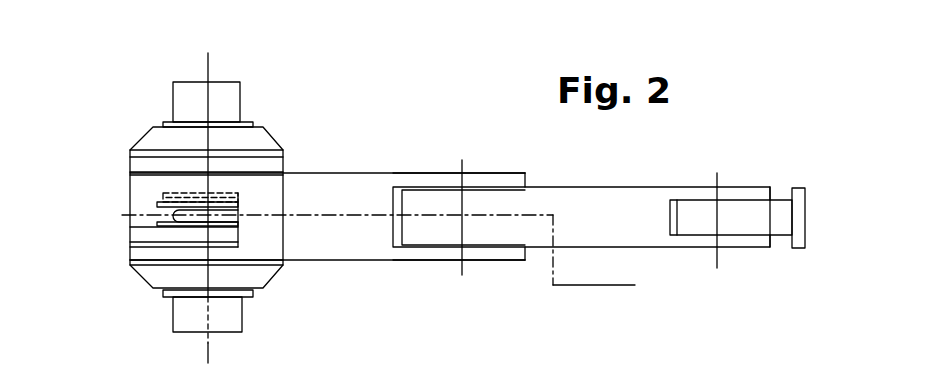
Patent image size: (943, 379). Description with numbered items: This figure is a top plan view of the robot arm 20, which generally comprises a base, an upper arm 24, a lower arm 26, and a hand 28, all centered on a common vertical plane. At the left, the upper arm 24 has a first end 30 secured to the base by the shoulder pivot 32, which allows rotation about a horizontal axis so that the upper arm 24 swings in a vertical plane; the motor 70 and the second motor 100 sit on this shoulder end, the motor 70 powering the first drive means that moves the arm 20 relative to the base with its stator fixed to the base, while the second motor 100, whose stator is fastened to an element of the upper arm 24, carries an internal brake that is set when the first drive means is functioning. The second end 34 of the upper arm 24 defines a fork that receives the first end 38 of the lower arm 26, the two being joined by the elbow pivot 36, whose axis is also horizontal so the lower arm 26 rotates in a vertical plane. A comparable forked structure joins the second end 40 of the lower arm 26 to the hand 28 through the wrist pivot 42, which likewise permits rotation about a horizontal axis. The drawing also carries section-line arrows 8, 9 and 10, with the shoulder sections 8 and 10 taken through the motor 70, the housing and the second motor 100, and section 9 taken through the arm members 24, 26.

The robot arm 20 is at (615, 167).
The upper arm 24 is at (343, 206).
The lower arm 26 is at (623, 220).
The hand 28 is at (761, 226).
The first end 30 is at (141, 183).
The shoulder pivot 32 is at (210, 302).
The second end 34 is at (492, 173).
The elbow pivot 36 is at (462, 163).
The first end 38 is at (516, 241).
The second end 40 is at (743, 187).
The wrist pivot 42 is at (720, 258).
The motor 70 is at (233, 102).
The second motor 100 is at (228, 323).
The section line 8- 8 is at (253, 63).
The section line 9- 9 is at (93, 208).
The section line 10- 10 is at (118, 198).